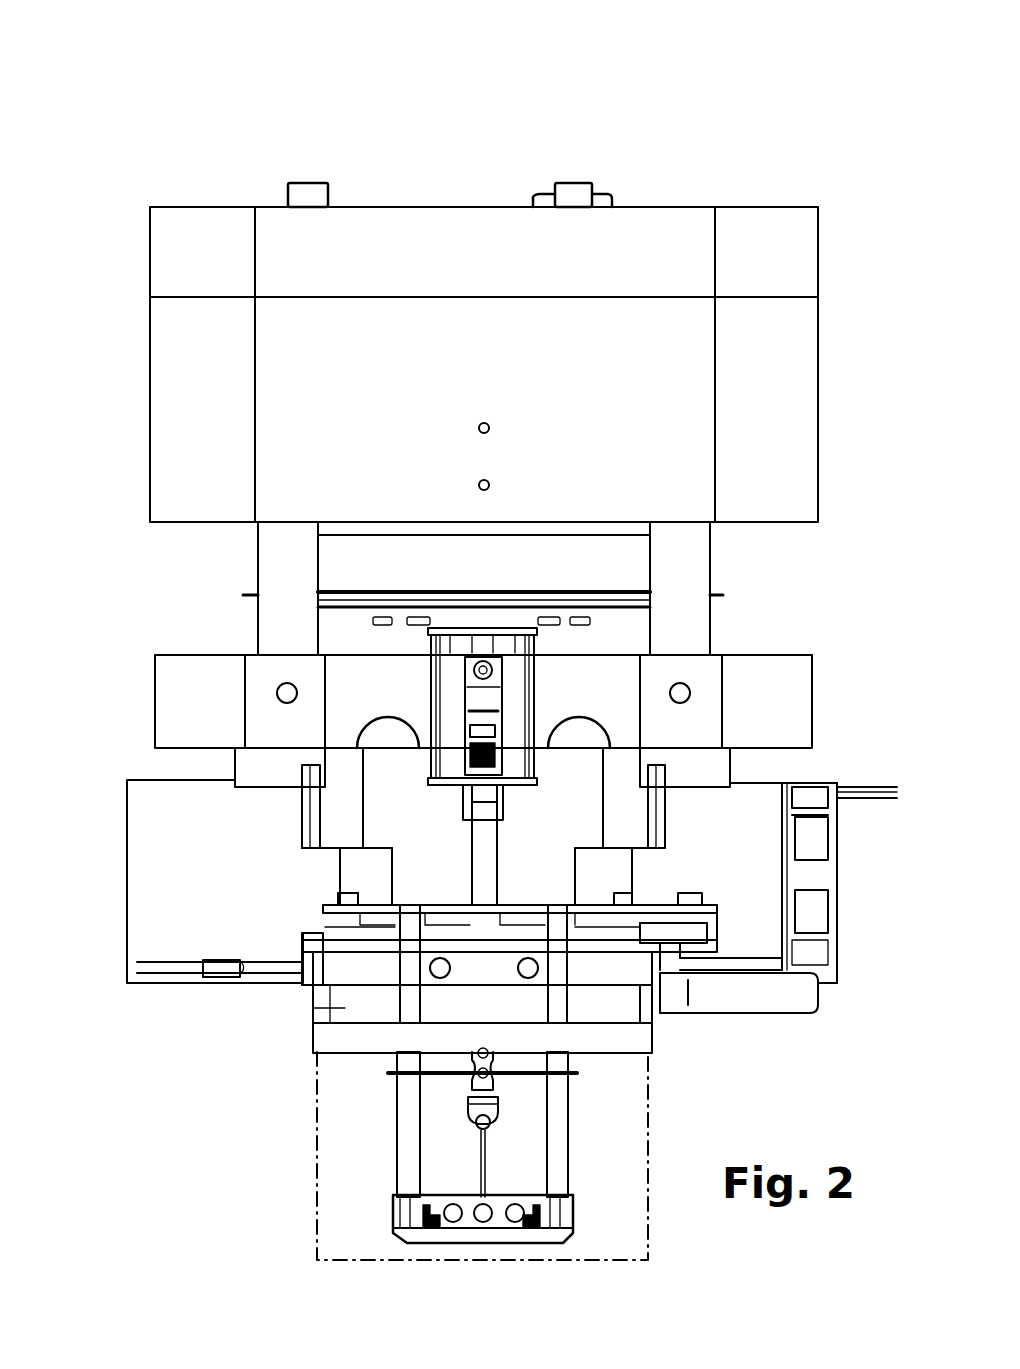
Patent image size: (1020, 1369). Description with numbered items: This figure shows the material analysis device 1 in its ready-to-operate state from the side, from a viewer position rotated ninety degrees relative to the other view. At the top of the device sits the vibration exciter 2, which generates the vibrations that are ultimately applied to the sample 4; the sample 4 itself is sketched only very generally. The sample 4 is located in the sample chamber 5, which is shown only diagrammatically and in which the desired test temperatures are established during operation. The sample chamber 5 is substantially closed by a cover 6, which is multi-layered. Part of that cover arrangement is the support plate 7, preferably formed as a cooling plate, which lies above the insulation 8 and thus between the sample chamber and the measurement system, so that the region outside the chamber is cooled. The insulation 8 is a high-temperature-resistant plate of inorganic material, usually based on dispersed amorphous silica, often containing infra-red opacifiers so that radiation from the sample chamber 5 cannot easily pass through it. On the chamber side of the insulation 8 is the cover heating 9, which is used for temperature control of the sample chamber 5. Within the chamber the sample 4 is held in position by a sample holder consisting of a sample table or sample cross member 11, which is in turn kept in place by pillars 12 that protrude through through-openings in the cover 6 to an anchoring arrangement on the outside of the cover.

The material analysis device 1 is at (749, 148).
The vibration exciter 2 is at (428, 343).
The sample 4 is at (478, 1172).
The sample chamber 5 is at (347, 1235).
The cover 6 is at (290, 950).
The support plate 7 is at (318, 968).
The insulation 8 is at (325, 990).
The cover heating 9 is at (320, 1037).
The sample cross member 11 is at (450, 1233).
The pillars 12 is at (407, 1117).